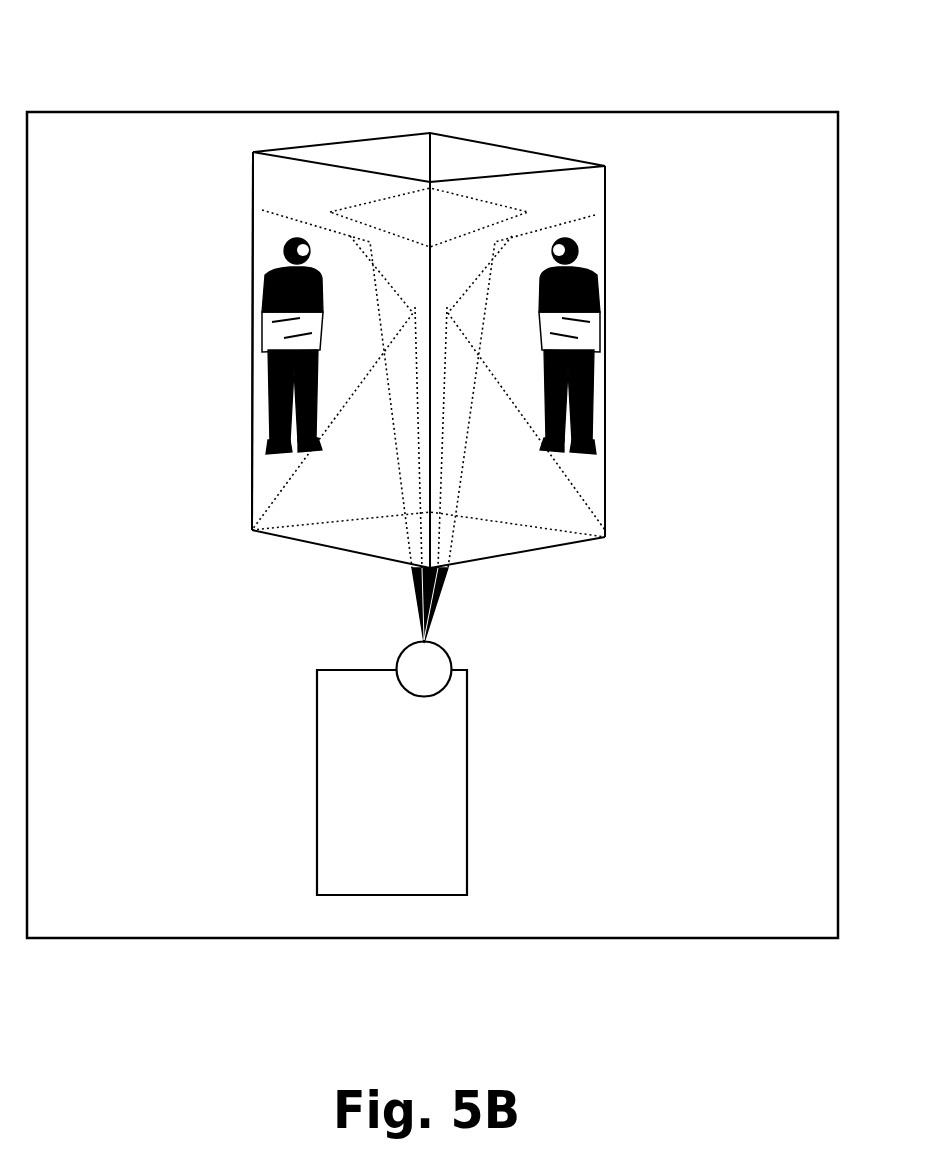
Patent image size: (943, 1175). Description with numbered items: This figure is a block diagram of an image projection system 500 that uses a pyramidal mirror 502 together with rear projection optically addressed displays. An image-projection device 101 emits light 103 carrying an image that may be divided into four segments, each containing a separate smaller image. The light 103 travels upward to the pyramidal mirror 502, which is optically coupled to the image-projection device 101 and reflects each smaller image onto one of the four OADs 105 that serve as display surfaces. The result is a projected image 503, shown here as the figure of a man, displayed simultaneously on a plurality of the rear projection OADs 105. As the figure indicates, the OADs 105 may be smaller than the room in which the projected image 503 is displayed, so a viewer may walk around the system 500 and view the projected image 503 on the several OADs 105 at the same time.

The image projection system 500 is at (215, 78).
The pyramidal mirror 502 is at (463, 162).
The optically addressed display 105 is at (253, 233).
The projected image 503 is at (233, 412).
The light 103 is at (470, 580).
The image-projection device 101 is at (413, 793).